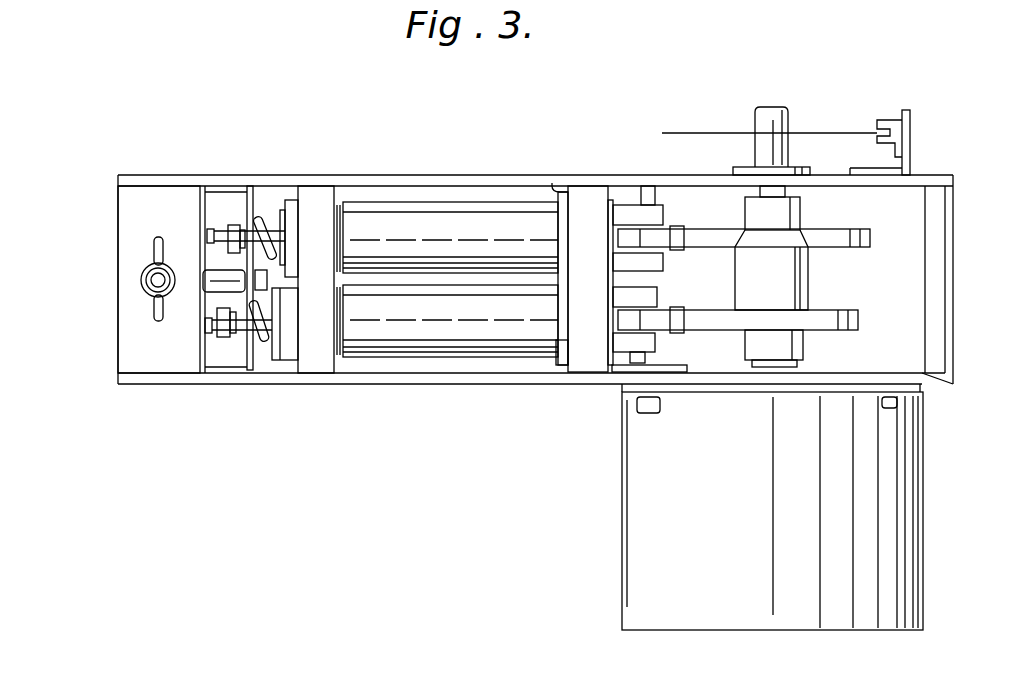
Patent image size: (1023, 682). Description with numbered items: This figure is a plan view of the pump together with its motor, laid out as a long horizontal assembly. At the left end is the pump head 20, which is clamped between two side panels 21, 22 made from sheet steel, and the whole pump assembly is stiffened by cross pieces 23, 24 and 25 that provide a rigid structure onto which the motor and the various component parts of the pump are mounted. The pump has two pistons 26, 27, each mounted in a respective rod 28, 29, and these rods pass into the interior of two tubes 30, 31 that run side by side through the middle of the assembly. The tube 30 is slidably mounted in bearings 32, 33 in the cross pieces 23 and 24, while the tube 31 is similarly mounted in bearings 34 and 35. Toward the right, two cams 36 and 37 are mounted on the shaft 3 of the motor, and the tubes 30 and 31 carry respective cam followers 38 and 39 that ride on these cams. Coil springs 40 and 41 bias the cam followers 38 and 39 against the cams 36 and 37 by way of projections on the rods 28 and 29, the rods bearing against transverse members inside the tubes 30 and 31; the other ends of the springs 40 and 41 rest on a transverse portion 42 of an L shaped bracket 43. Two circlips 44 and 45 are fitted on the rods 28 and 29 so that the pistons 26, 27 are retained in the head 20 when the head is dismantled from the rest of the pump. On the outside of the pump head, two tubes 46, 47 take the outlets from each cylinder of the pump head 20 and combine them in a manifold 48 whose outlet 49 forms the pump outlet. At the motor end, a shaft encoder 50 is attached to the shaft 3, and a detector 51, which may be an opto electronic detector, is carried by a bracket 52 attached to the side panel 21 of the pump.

The shaft 3 is at (785, 108).
The pump head 20 is at (163, 193).
The side panel 21 is at (547, 175).
The side panel 22 is at (452, 380).
The cross piece 23 is at (322, 225).
The cross piece 24 is at (597, 188).
The cross piece 25 is at (953, 200).
The piston 26 is at (213, 235).
The piston 27 is at (203, 325).
The rod 28 is at (292, 212).
The rod 29 is at (238, 340).
The tube 30 is at (474, 212).
The tube 31 is at (518, 338).
The bearing 32 is at (345, 240).
The bearing 33 is at (558, 190).
The bearing 34 is at (350, 378).
The bearing 35 is at (562, 365).
The cam 36 is at (872, 228).
The cam 37 is at (858, 328).
The cam follower 38 is at (645, 235).
The cam follower 39 is at (635, 322).
The coil spring 40 is at (268, 238).
The coil spring 41 is at (263, 345).
The transverse portion 42 is at (240, 242).
The L shaped bracket 43 is at (220, 197).
The circlip 44 is at (235, 232).
The circlip 45 is at (226, 335).
The tube 46 is at (153, 243).
The tube 47 is at (158, 320).
The manifold 48 is at (150, 297).
The outlet 49 is at (153, 280).
The shaft encoder 50 is at (722, 132).
The detector 51 is at (880, 120).
The bracket 52 is at (908, 112).